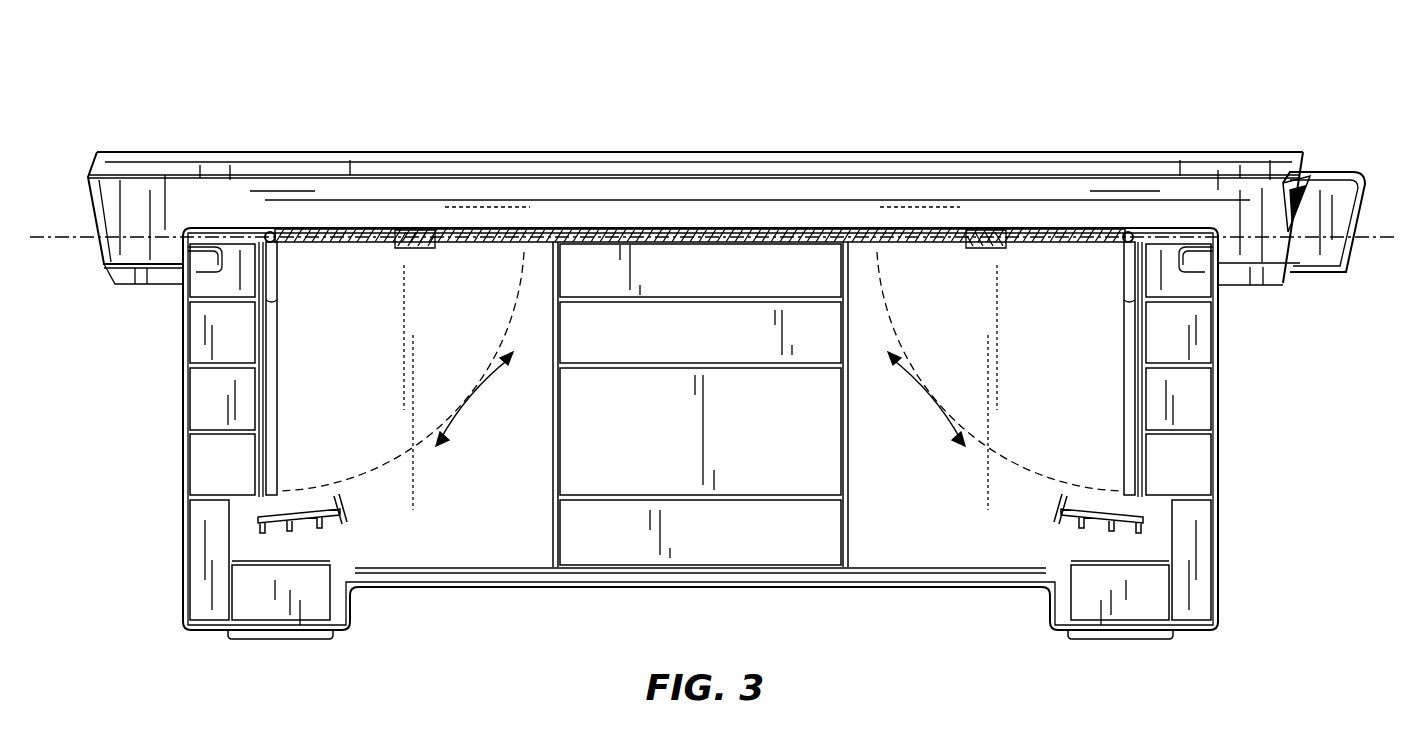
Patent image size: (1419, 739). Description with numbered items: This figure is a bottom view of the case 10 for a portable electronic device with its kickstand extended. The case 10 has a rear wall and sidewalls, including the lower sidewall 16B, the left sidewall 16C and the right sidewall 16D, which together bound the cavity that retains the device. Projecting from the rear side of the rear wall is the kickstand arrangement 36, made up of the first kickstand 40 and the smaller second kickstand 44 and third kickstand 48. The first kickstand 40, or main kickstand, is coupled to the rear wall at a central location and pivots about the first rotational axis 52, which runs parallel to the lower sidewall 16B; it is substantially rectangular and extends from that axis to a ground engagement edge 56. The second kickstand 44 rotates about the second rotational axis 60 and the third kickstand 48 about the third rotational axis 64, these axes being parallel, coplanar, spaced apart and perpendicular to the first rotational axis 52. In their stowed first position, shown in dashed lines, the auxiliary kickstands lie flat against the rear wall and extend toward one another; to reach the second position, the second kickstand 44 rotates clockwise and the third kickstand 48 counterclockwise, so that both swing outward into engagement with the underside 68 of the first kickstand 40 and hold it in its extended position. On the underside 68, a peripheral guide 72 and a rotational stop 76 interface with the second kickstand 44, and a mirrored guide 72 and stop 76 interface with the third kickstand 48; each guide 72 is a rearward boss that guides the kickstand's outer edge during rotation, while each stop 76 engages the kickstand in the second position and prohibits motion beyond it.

The case 10 is at (1150, 104).
The lower sidewall 16B is at (680, 152).
The left sidewall 16C is at (88, 202).
The right sidewall 16D is at (1293, 233).
The kickstand arrangement 36 is at (436, 621).
The first kickstand 40 is at (893, 540).
The second kickstand 44 is at (373, 228).
The third kickstand 48 is at (1025, 228).
The first rotational axis 52 is at (78, 247).
The ground engagement edge 56 is at (278, 641).
The second rotational axis 60 is at (268, 230).
The third rotational axis 64 is at (1128, 230).
The underside 68 is at (666, 444).
The peripheral guide 72 is at (262, 508).
The rotational stop 76 is at (255, 462).